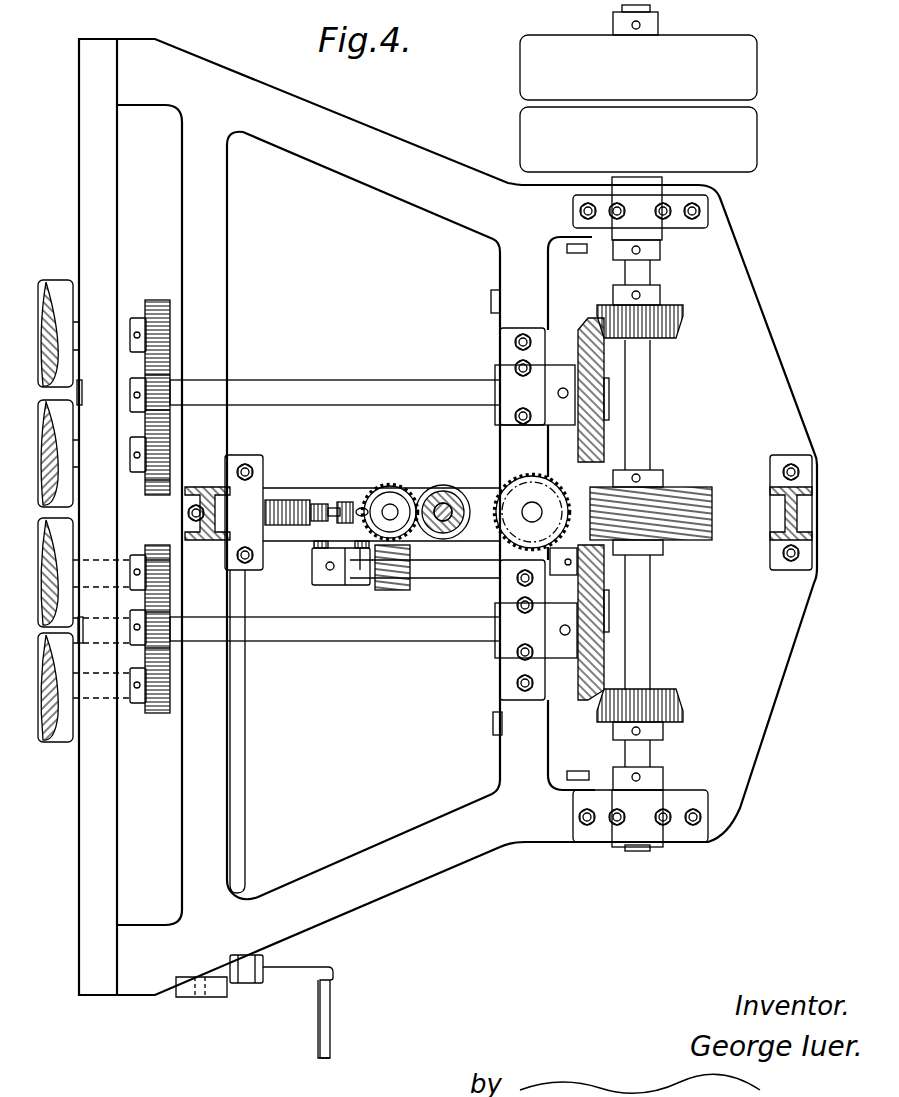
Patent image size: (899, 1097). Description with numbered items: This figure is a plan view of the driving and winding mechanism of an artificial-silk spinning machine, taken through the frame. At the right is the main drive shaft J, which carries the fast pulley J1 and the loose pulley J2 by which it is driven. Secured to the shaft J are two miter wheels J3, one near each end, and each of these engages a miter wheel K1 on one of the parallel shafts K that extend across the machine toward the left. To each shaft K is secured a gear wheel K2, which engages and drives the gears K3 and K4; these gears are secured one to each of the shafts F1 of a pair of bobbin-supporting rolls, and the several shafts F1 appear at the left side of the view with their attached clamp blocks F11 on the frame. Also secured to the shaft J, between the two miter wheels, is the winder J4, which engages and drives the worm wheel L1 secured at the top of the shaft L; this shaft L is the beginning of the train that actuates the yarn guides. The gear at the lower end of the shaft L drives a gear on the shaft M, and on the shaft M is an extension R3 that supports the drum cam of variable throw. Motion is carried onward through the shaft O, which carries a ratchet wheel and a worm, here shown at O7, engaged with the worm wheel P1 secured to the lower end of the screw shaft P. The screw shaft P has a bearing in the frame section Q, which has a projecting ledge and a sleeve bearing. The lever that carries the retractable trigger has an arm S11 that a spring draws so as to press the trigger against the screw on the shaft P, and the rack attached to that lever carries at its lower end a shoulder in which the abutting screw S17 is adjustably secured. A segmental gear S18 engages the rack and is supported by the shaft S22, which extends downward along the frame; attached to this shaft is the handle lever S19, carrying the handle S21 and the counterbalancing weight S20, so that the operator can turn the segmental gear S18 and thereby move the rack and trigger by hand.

The shaft F1 is at (55, 511).
The clamp block F11 is at (137, 318).
The gear K3 is at (158, 300).
The gear wheel K2 is at (160, 383).
The gear K4 is at (150, 497).
The parallel shaft K is at (335, 512).
The segmental gear S18 is at (287, 502).
The arm S11 is at (320, 504).
The frame section Q is at (357, 488).
The abutting screw S17 is at (345, 501).
The screw shaft P is at (390, 512).
The shaft M is at (443, 496).
The extension R3 is at (445, 503).
The shaft L is at (532, 512).
The worm wheel L1 is at (500, 448).
The shaft J is at (637, 513).
The fast pulley J1 is at (638, 67).
The loose pulley J2 is at (638, 139).
The miter wheel J3 is at (683, 322).
The winder J4 is at (712, 512).
The miter wheel K1 is at (592, 596).
The shaft O is at (425, 572).
The worm O7 is at (410, 588).
The worm wheel P1 is at (338, 586).
The shaft S22 is at (252, 858).
The counterbalancing weight S20 is at (192, 997).
The handle lever S19 is at (243, 985).
The handle S21 is at (331, 1020).